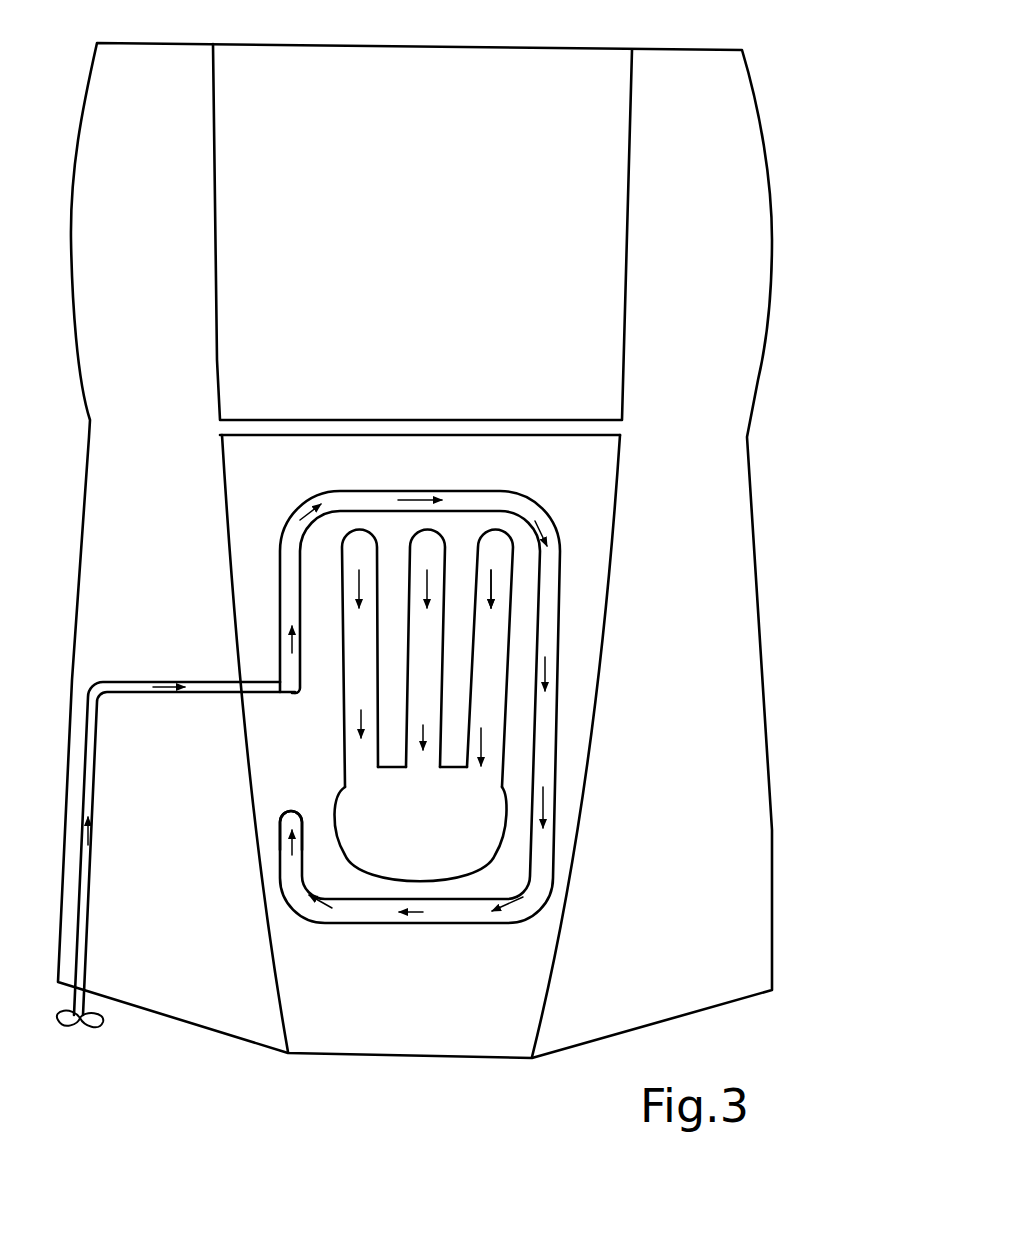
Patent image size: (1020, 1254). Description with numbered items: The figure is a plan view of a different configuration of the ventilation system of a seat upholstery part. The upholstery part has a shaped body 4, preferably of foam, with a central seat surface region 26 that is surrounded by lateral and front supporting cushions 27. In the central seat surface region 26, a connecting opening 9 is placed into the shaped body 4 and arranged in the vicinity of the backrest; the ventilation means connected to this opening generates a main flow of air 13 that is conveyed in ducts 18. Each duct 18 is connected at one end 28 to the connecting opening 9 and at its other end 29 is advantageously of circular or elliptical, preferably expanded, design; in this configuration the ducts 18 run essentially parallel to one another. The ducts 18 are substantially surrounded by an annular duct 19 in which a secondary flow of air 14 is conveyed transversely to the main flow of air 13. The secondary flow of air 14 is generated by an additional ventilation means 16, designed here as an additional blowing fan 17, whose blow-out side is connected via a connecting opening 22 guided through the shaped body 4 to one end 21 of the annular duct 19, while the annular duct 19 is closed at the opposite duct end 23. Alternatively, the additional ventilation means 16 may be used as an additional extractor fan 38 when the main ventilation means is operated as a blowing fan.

The shaped body 4 is at (740, 892).
The lateral and front supporting cushions 27 is at (532, 70).
The central seat surface region 26 is at (603, 473).
The annular duct 19 is at (477, 495).
The other end of the ducts 29 is at (423, 547).
The ducts 18 is at (500, 590).
The secondary flow of air 14 is at (553, 670).
The main flow of air 13 is at (483, 740).
The one end of the ducts 28 is at (363, 777).
The connecting opening 9 is at (429, 848).
The connecting opening 22 is at (278, 678).
The end of the annular duct 21 is at (287, 695).
The duct end 23 is at (290, 810).
The additional ventilation means 16 is at (130, 1052).
The additional blowing fan 17 is at (130, 1052).
The additional extractor fan 38 is at (102, 1028).